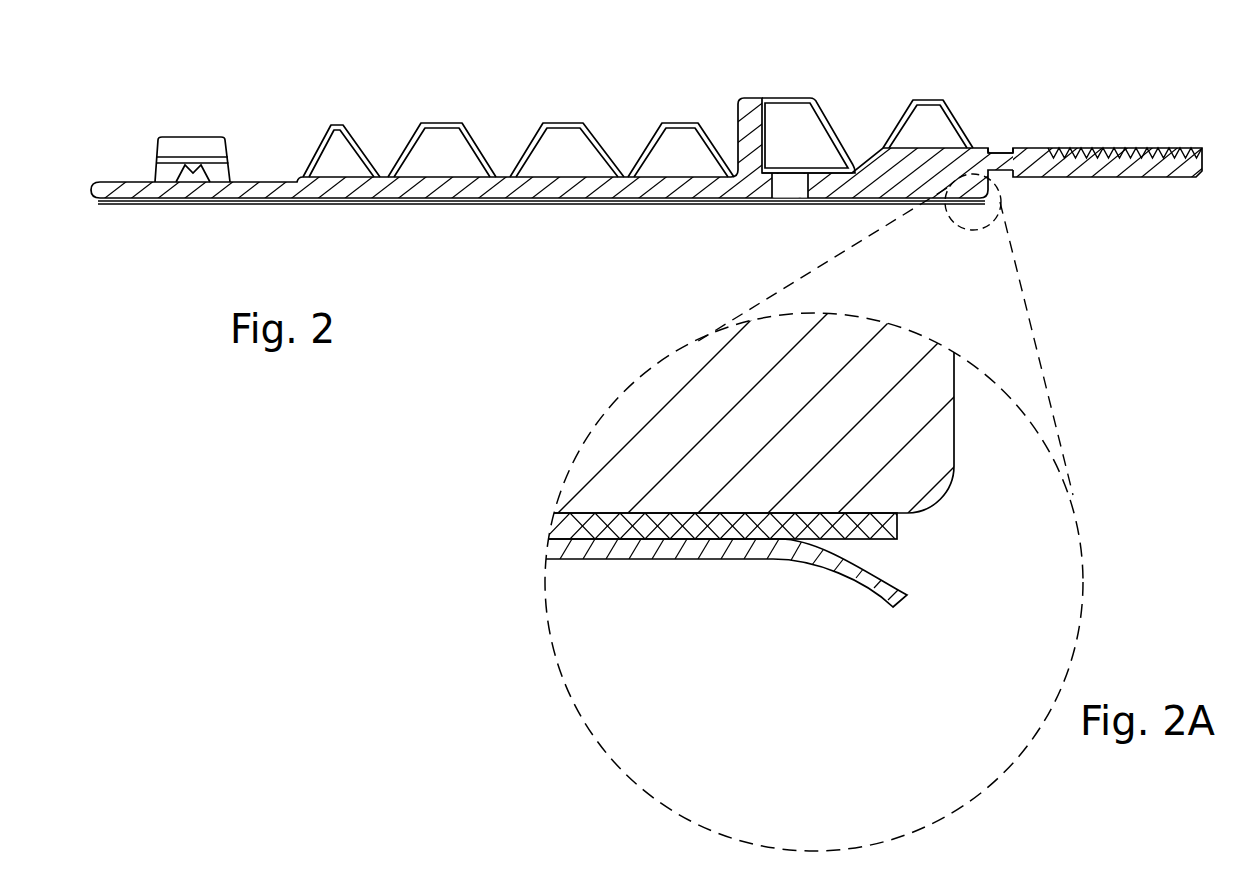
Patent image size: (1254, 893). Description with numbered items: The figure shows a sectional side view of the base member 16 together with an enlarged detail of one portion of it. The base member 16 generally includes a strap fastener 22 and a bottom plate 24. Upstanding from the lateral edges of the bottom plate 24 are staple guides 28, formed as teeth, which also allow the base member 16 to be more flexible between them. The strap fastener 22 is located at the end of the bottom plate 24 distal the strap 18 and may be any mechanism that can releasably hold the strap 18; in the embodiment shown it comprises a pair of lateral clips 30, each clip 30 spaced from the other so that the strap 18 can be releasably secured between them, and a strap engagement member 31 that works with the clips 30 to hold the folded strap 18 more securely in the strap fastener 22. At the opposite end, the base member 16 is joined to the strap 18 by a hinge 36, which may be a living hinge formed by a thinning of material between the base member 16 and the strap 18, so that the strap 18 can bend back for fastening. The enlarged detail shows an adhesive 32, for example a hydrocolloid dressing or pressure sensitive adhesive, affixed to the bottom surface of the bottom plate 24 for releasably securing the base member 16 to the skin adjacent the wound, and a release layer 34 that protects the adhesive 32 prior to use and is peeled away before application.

In FIG. 2, the base member 16 is at (621, 83).
In FIG. 2, the strap 18 is at (1106, 114).
In FIG. 2, the strap fastener 22 is at (220, 117).
In FIG. 2, the bottom plate 24 is at (347, 193).
In FIG. 2A, the bottom plate 24 is at (930, 465).
In FIG. 2, the staple guides 28 is at (338, 150).
In FIG. 2, the lateral clips 30 is at (163, 146).
In FIG. 2, the strap engagement member 31 is at (185, 176).
In FIG. 2A, the adhesive 32 is at (892, 527).
In FIG. 2A, the release layer 34 is at (893, 602).
In FIG. 2, the hinge 36 is at (1000, 148).